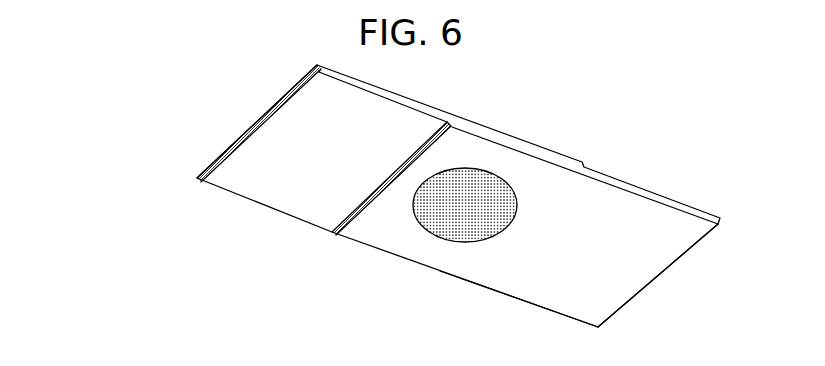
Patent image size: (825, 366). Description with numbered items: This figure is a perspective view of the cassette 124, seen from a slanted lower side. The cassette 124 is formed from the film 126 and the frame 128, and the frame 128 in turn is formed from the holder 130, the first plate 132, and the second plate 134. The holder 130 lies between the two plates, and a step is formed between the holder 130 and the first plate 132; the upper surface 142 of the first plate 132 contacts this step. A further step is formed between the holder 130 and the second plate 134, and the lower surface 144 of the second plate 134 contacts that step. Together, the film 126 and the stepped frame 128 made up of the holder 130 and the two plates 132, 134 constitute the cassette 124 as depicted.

The cassette 124 is at (571, 121).
The film 126 is at (430, 207).
The frame 128 is at (413, 248).
The holder 130 is at (468, 262).
The first plate 132 is at (628, 260).
The second plate 134 is at (257, 114).
The upper surface 142 is at (650, 178).
The lower surface 144 is at (258, 173).